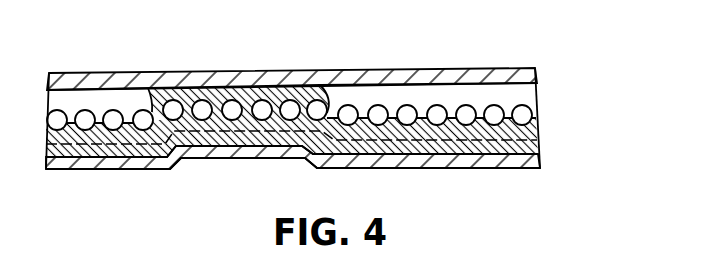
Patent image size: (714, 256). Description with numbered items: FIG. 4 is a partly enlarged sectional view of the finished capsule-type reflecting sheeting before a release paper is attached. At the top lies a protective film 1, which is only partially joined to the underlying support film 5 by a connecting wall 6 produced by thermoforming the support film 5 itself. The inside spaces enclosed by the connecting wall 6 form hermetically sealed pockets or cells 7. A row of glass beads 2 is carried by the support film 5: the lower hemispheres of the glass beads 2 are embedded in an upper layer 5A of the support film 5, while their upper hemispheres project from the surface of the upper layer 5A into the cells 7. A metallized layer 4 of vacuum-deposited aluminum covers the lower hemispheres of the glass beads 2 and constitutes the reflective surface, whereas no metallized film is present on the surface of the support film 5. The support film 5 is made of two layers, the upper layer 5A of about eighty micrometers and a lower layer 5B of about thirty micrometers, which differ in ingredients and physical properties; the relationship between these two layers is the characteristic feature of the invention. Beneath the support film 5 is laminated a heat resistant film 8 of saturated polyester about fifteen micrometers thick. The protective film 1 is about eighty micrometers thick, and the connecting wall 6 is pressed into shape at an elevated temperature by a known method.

The protective film 1 is at (507, 78).
The glass beads 2 is at (525, 110).
The metallized layer 4 is at (460, 137).
The support film 5 is at (332, 133).
The upper layer 5A is at (538, 130).
The lower layer 5B is at (538, 148).
The connecting wall 6 is at (241, 97).
The cells 7 is at (98, 98).
The heat resistant film 8 is at (533, 166).